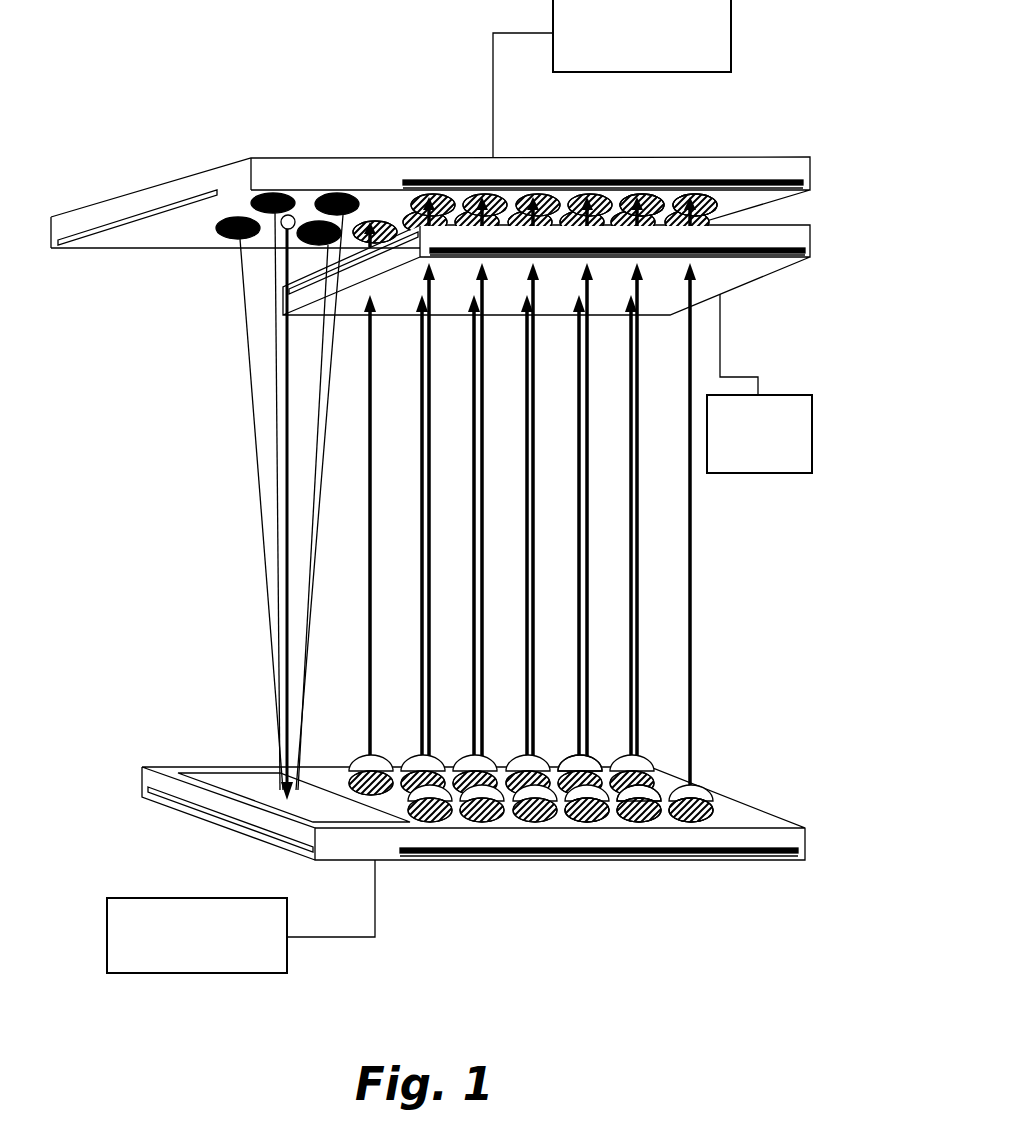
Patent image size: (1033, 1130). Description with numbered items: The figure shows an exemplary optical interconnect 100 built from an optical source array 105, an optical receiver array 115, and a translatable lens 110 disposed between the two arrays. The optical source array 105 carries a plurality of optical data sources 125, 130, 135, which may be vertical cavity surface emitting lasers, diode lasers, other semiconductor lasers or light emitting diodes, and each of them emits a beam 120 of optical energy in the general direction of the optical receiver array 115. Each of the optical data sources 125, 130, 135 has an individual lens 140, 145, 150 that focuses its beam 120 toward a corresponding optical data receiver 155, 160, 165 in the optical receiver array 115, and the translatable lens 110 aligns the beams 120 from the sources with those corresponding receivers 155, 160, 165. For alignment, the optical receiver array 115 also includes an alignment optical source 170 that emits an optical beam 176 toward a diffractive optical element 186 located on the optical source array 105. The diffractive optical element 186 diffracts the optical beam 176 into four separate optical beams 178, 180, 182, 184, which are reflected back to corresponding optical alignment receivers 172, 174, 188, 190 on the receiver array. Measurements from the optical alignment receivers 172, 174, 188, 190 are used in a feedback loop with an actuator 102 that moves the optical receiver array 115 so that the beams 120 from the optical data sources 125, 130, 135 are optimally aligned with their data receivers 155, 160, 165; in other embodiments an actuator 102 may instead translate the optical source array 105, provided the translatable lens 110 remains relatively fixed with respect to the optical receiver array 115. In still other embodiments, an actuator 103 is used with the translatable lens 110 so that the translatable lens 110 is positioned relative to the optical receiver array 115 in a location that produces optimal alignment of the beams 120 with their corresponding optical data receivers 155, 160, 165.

The optical interconnect 100 is at (218, 106).
The actuator 102 is at (627, 57).
The actuator 103 is at (744, 457).
The optical source array 105 is at (750, 820).
The translatable lens 110 is at (724, 275).
The optical receiver array 115 is at (397, 200).
The beams 120 is at (714, 668).
The optical data source 125 is at (697, 828).
The optical data source 130 is at (647, 828).
The optical data source 135 is at (587, 828).
The lens 140 is at (698, 787).
The lens 145 is at (650, 793).
The lens 150 is at (603, 793).
The optical data receiver 155 is at (707, 198).
The optical data receiver 160 is at (640, 198).
The optical data receiver 165 is at (591, 198).
The alignment optical source 170 is at (288, 215).
The optical alignment receiver 172 is at (217, 238).
The optical alignment receiver 174 is at (273, 193).
The optical beam 176 is at (287, 432).
The optical beam 178 is at (275, 505).
The optical beam 180 is at (263, 567).
The optical beam 182 is at (315, 583).
The optical beam 184 is at (313, 547).
The diffractive optical element 186 is at (235, 783).
The optical alignment receiver 188 is at (298, 222).
The optical alignment receiver 190 is at (345, 193).